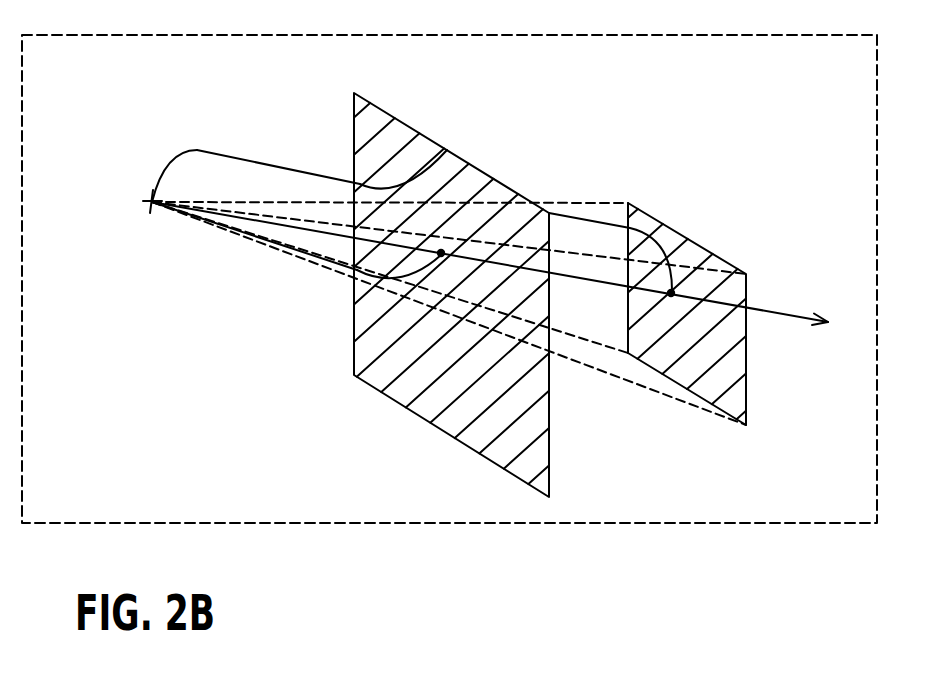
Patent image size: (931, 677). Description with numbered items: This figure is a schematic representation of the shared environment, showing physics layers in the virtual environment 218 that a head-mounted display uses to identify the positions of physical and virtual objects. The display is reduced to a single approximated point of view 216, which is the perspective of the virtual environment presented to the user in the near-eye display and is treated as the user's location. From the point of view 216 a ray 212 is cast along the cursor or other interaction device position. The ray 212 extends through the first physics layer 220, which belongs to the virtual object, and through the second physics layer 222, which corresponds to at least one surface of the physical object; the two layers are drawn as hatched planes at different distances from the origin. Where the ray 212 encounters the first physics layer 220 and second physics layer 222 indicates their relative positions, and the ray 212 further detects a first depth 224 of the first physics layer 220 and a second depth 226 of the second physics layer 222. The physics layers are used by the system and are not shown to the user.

The ray 212 is at (770, 311).
The point of view 216 is at (153, 201).
The virtual environment 218 is at (698, 486).
The first physics layer 220 is at (688, 238).
The second physics layer 222 is at (396, 117).
The first depth 224 is at (475, 205).
The second depth 226 is at (153, 210).